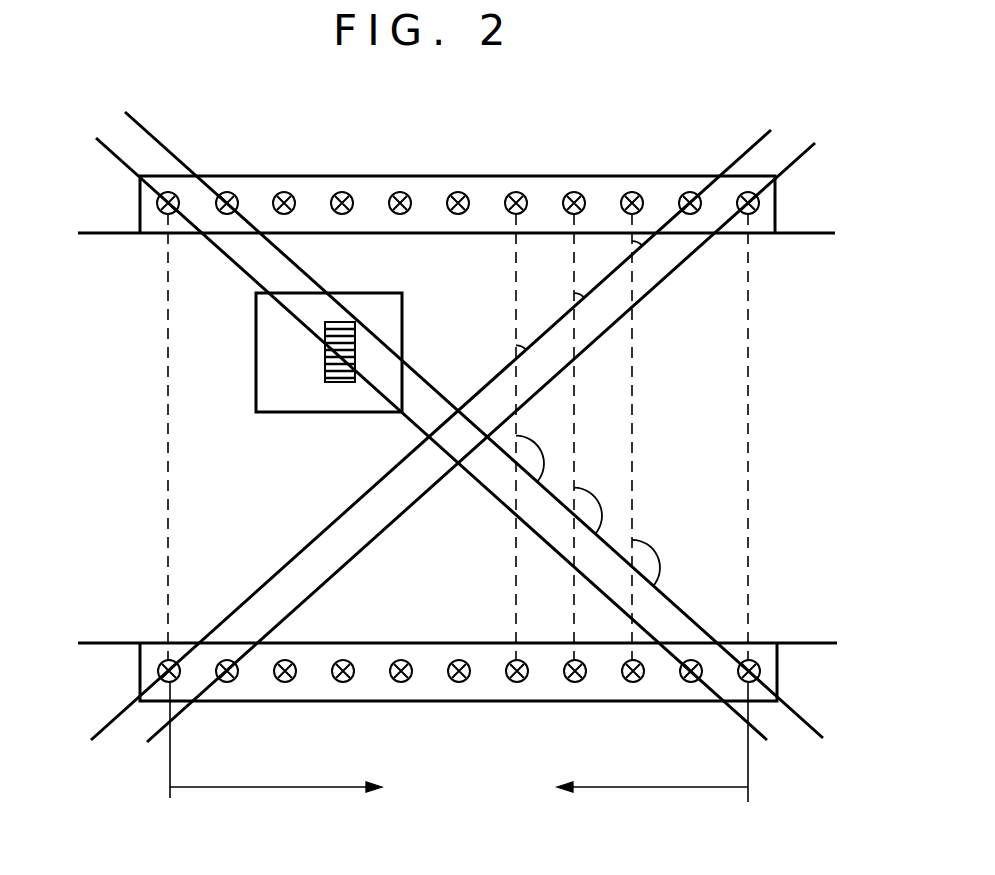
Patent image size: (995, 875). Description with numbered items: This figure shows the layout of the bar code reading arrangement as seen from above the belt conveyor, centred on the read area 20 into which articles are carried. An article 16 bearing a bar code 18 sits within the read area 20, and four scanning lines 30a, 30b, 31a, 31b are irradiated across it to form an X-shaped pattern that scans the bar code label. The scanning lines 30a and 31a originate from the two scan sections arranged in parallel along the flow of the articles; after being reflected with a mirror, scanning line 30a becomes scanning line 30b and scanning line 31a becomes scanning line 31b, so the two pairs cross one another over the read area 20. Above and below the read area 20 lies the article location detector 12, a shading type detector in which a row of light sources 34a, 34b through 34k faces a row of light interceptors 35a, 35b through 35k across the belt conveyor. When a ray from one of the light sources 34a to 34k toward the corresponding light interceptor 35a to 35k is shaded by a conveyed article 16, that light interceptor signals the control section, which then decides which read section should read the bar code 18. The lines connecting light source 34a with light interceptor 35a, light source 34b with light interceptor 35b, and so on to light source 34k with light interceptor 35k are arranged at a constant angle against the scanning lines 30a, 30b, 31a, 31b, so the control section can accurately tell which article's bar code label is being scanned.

The article location detector 12 is at (549, 176).
The article 16 is at (404, 312).
The bar code 18 is at (330, 383).
The read area 20 is at (459, 743).
The scanning line 30a is at (113, 153).
The scanning line 30b is at (758, 142).
The scanning line 31a is at (158, 140).
The scanning line 31b is at (803, 155).
The light source 34a is at (753, 214).
The light source 34b is at (690, 192).
The light source 34k is at (178, 196).
The light interceptor 35a is at (761, 672).
The light interceptor 35b is at (690, 683).
The light interceptor 35k is at (158, 671).